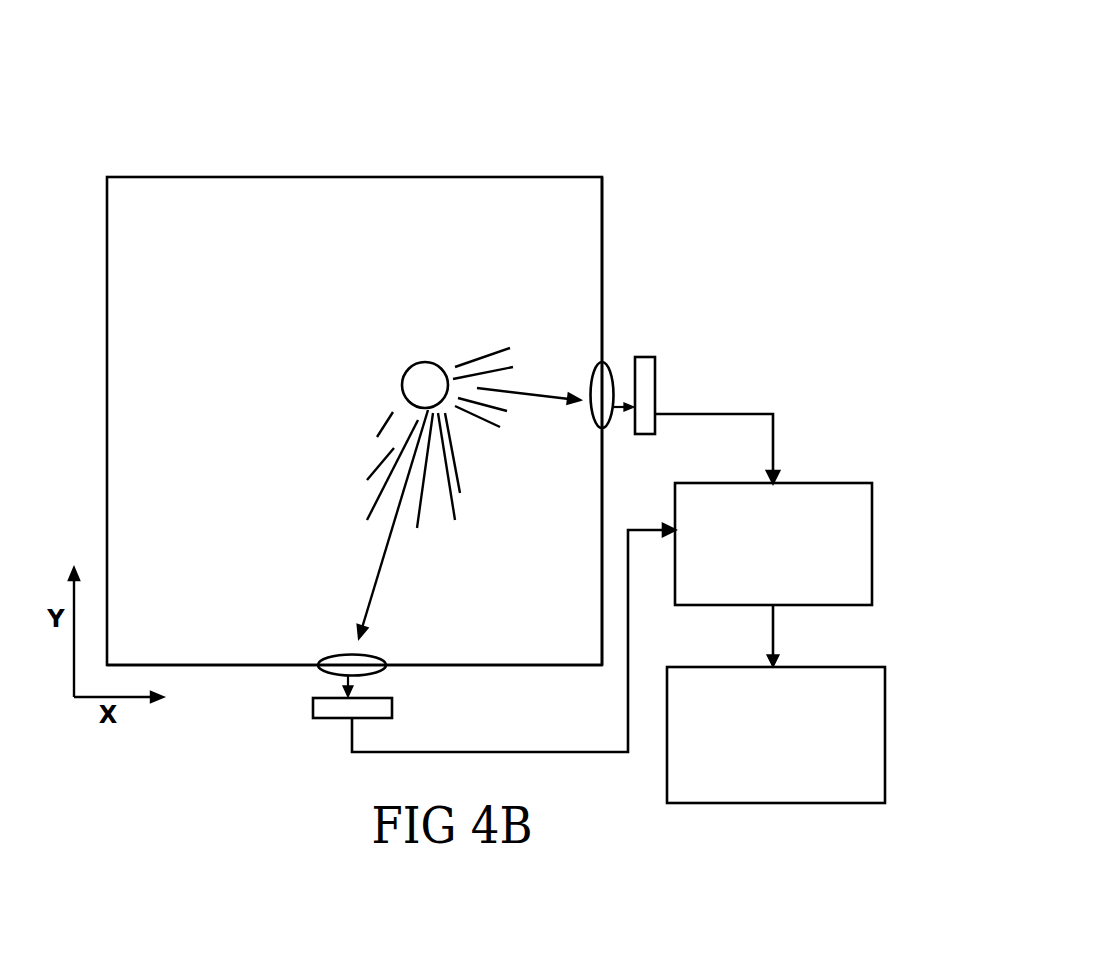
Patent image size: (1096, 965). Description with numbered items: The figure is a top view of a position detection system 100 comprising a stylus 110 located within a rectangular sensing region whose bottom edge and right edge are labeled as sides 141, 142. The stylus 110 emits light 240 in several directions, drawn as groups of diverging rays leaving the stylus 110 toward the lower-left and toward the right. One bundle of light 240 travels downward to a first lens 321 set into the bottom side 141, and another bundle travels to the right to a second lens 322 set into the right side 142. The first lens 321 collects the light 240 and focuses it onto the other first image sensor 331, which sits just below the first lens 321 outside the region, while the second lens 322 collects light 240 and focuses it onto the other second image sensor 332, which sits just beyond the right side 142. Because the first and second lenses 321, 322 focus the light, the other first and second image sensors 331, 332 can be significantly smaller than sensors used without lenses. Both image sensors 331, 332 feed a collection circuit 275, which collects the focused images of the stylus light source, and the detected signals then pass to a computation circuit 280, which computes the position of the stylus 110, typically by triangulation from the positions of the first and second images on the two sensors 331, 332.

The position detection system 100 is at (411, 339).
The stylus 110 is at (412, 365).
The first side of sensing area 141 is at (189, 664).
The second side of sensing area 142 is at (600, 223).
The light 240 is at (495, 332).
The collection circuit 275 is at (820, 605).
The computation circuit 280 is at (790, 803).
The first lens 321 is at (387, 657).
The second lens 322 is at (592, 429).
The other first image sensor 331 is at (393, 703).
The other second image sensor 332 is at (645, 357).